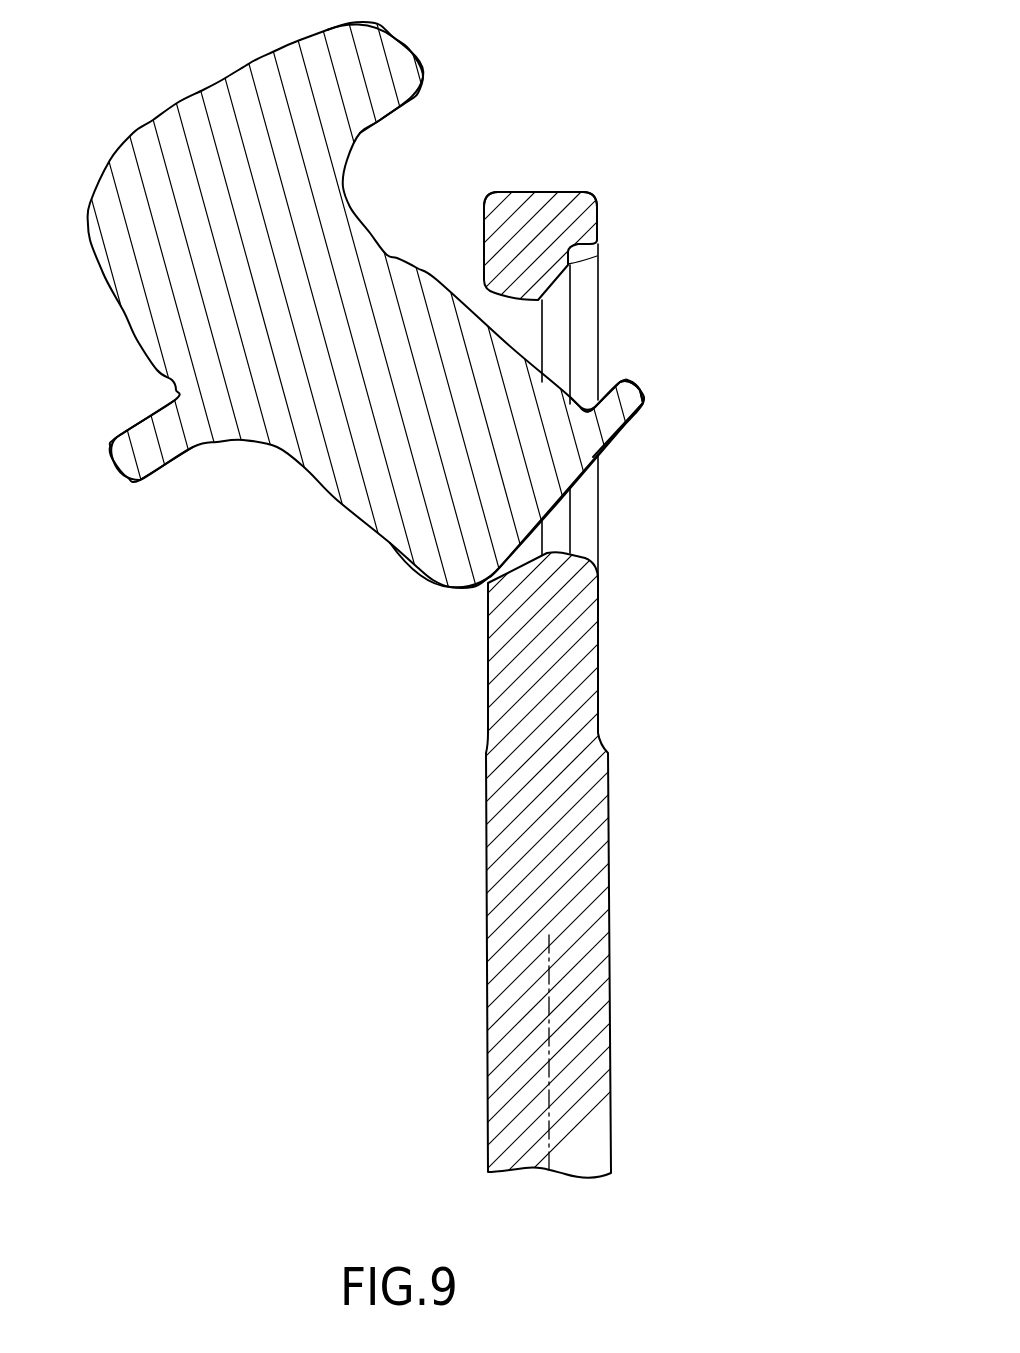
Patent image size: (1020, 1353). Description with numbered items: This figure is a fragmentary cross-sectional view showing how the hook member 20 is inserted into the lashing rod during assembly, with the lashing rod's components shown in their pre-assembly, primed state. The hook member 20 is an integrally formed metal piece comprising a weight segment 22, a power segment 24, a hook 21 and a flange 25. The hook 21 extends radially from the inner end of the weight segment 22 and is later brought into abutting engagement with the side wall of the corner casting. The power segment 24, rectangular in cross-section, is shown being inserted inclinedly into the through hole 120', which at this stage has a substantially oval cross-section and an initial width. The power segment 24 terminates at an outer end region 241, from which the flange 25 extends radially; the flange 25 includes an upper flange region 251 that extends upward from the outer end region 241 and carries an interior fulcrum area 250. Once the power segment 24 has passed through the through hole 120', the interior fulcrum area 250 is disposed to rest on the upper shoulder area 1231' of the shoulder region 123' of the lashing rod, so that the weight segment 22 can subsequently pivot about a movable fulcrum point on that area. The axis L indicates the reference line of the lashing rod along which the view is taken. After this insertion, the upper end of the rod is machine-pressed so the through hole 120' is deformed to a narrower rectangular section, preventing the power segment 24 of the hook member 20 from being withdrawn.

The hook member 20 is at (427, 240).
The hook 21 is at (393, 58).
The weight segment 22 is at (277, 397).
The power segment 24 is at (473, 537).
The outer end region 241 is at (577, 467).
The flange 25 is at (670, 398).
The interior fulcrum area 250 is at (605, 392).
The upper flange region 251 is at (637, 393).
The through hole 120' is at (615, 412).
The upper shoulder area 1231' is at (628, 234).
The shoulder region 123' is at (540, 216).
The axis line L is at (549, 1180).